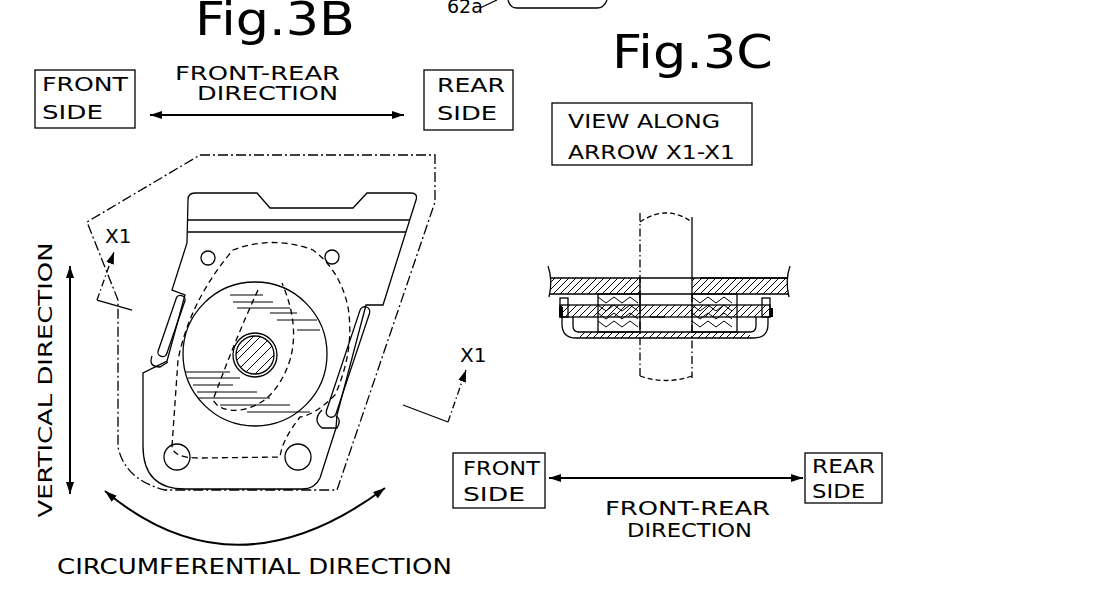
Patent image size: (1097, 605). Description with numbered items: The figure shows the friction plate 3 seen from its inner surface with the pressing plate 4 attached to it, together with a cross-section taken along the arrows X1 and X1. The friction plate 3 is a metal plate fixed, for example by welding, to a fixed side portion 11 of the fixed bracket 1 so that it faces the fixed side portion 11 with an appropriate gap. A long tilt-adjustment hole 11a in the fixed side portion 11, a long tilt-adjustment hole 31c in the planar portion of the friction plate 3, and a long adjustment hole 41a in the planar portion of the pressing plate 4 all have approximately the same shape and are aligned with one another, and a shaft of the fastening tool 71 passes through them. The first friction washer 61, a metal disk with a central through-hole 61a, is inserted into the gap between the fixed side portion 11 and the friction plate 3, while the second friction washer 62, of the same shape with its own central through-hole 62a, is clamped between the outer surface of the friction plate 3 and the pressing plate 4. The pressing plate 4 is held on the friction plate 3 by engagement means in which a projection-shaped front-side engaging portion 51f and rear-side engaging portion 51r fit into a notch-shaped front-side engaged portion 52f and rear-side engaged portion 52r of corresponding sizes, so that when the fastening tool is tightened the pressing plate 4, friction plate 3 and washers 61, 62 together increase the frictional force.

In FIG. 3B, the fixed bracket 1 is at (440, 200).
In FIG. 3C, the fixed bracket 1 is at (763, 264).
In FIG. 3B, the friction plate 3 is at (183, 238).
In FIG. 3C, the friction plate 3 is at (584, 288).
In FIG. 3B, the pressing plate 4 is at (308, 433).
In FIG. 3C, the pressing plate 4 is at (749, 328).
In FIG. 3C, the fixed side portion 11 is at (725, 268).
In FIG. 3C, the long tilt-adjustment hole 11a is at (692, 272).
In FIG. 3C, the long tilt-adjustment hole 31c is at (656, 302).
In FIG. 3C, the long adjustment hole 41a is at (686, 324).
In FIG. 3B, the front-side engaging portion 51f is at (168, 300).
In FIG. 3C, the front-side engaging portion 51f is at (561, 322).
In FIG. 3B, the rear-side engaging portion 51r is at (362, 337).
In FIG. 3C, the rear-side engaging portion 51r is at (769, 323).
In FIG. 3B, the front-side engaged portion 52f is at (152, 356).
In FIG. 3C, the front-side engaged portion 52f is at (559, 309).
In FIG. 3B, the rear-side engaged portion 52r is at (340, 414).
In FIG. 3C, the rear-side engaged portion 52r is at (773, 310).
In FIG. 3B, the first friction washer 61 is at (318, 312).
In FIG. 3C, the first friction washer 61 is at (604, 295).
In FIG. 3B, the through-hole 61a is at (230, 357).
In FIG. 3C, the through-hole 61a is at (640, 292).
In FIG. 3C, the second friction washer 62 is at (623, 337).
In FIG. 3C, the through-hole 62a is at (658, 315).
In FIG. 3B, the shaft 71 is at (263, 333).
In FIG. 3C, the shaft 71 is at (693, 347).